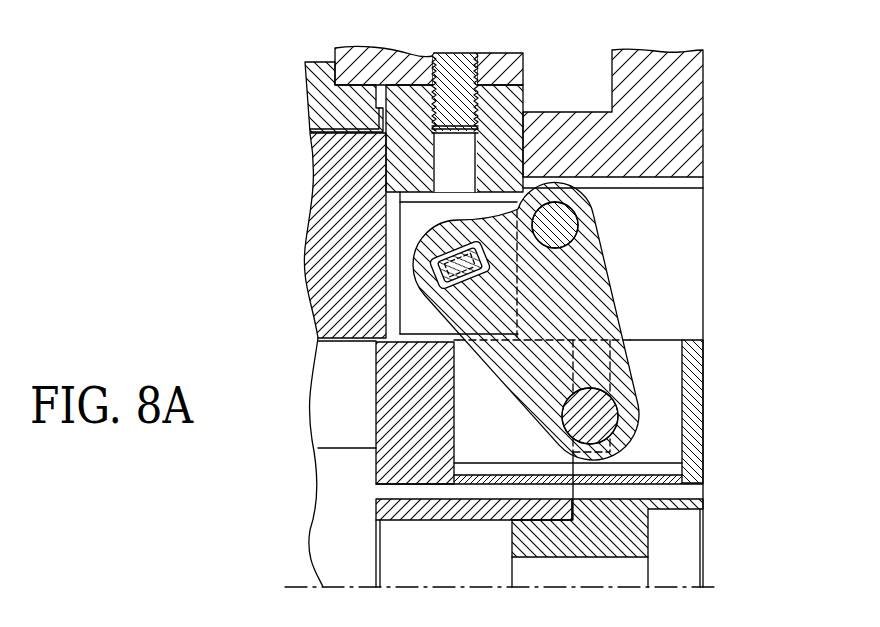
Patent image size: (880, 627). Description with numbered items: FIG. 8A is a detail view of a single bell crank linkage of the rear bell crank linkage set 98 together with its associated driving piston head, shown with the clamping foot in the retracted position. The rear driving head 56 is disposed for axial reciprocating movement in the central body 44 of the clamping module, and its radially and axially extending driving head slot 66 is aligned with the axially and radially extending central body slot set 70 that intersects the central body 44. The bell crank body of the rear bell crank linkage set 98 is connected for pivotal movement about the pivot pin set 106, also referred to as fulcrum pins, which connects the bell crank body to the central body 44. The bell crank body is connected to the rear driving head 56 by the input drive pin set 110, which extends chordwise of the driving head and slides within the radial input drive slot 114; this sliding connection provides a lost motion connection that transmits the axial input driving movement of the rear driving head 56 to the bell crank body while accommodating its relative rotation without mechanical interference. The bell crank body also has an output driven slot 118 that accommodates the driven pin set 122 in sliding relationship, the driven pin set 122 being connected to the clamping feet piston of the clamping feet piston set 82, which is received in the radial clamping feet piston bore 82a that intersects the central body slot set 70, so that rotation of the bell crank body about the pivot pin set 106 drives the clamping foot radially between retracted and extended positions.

The central body 44 is at (580, 110).
The rear driving head 56 is at (705, 478).
The driving head slot 66 is at (660, 408).
The central body slot set 70 is at (667, 250).
The clamping feet piston set 82 is at (525, 95).
The clamping feet piston bore 82a is at (415, 158).
The rear bell crank linkage set 98 is at (615, 290).
The pivot pin set 106 is at (557, 225).
The input drive pin set 110 is at (591, 417).
The radial input drive slot 114 is at (590, 365).
The output driven slot 118 is at (435, 253).
The driven pin set 122 is at (445, 283).